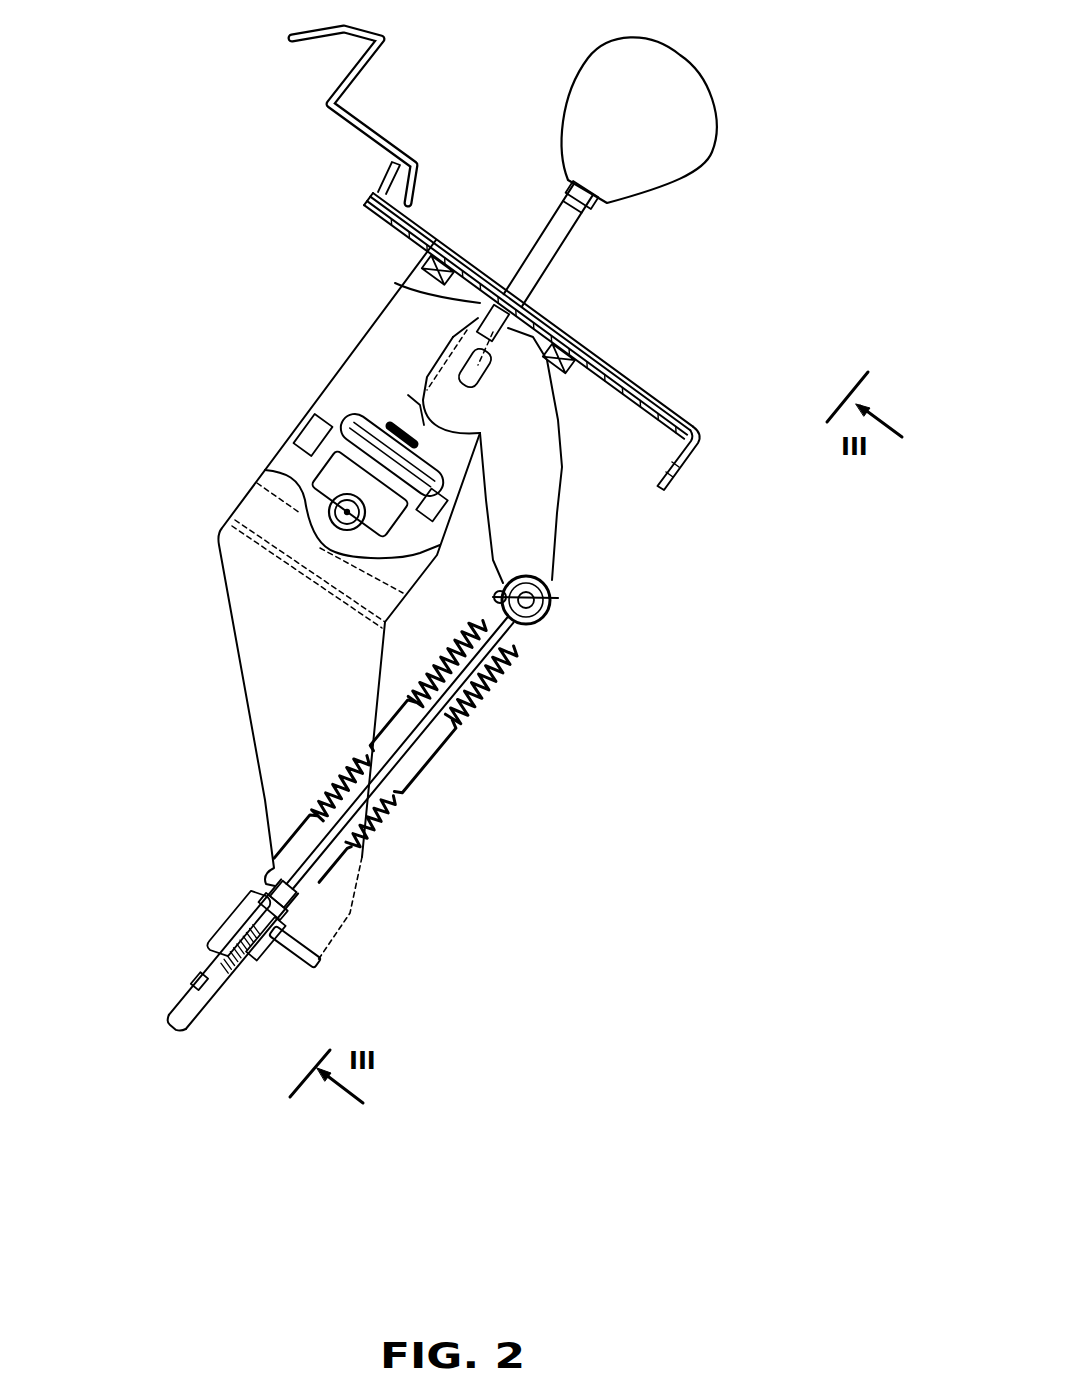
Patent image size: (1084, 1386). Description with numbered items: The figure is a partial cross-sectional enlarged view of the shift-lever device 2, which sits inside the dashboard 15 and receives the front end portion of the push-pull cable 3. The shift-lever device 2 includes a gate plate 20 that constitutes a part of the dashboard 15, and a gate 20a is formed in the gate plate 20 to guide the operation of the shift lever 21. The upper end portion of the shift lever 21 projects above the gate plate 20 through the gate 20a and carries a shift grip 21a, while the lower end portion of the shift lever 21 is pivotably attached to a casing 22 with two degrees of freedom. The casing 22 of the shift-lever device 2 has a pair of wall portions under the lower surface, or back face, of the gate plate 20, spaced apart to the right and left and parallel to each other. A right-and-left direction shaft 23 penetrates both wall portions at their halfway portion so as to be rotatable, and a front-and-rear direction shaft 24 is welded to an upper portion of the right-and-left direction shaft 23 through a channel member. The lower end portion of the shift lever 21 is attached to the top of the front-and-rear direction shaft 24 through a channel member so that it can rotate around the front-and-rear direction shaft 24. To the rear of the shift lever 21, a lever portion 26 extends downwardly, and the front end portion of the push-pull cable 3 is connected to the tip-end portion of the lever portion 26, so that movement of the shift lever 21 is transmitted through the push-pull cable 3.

The shift-lever device 2 is at (242, 170).
The push-pull cable 3 is at (177, 1000).
The dashboard 15 is at (383, 133).
The gate plate 20 is at (688, 420).
The gate 20a is at (660, 405).
The shift lever 21 is at (535, 240).
The shift grip 21a is at (683, 67).
The casing 22 is at (248, 663).
The right-and-left direction shaft 23 is at (327, 497).
The front-and-rear direction shaft 24 is at (343, 442).
The lever portion 26 is at (555, 515).